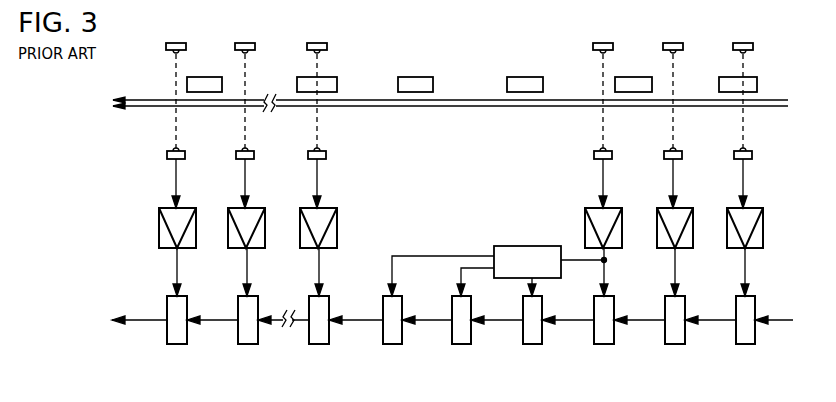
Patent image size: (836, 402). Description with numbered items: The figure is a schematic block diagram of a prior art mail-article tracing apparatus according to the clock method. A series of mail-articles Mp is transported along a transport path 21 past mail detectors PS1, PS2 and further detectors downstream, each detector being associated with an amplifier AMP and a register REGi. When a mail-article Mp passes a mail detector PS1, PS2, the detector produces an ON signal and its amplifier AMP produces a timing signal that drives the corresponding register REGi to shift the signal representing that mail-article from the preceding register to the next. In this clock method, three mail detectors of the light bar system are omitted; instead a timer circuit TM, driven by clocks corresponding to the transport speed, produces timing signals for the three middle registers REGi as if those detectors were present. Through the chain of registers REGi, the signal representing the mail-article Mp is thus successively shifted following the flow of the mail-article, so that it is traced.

The mail detector PS1 is at (176, 43).
The mail detector PS2 is at (245, 43).
The mail-article Mp is at (518, 77).
The transport path 21 is at (481, 108).
The amplifier AMP is at (159, 227).
The timer circuit TM is at (515, 246).
The register REGi is at (463, 344).